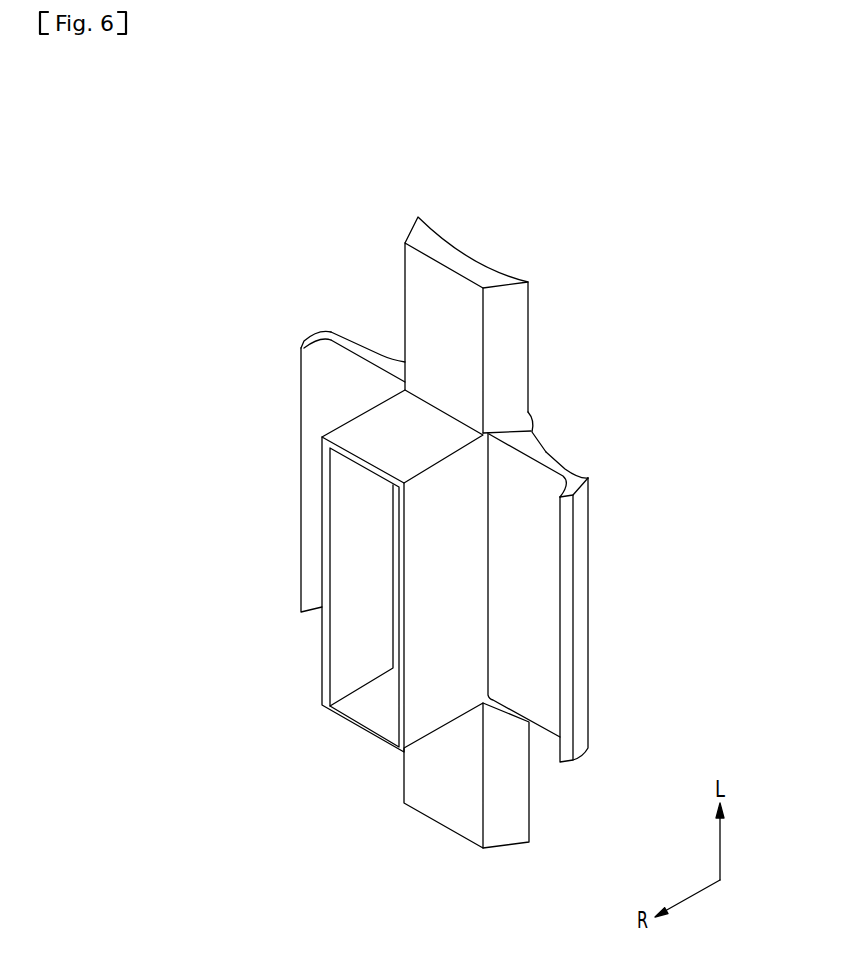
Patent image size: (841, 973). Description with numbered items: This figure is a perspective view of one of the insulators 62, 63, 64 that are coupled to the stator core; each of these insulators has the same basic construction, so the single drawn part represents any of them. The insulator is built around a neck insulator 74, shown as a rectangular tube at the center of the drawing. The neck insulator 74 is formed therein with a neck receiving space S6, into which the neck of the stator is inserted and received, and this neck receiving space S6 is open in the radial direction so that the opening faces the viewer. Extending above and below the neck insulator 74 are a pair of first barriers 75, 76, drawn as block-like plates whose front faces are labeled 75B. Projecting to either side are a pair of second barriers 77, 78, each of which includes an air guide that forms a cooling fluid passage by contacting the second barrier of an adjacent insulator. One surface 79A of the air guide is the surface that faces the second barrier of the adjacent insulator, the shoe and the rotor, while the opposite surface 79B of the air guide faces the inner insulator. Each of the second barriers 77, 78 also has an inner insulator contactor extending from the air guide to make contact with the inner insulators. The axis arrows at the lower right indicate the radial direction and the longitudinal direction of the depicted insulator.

The insulator 62 is at (459, 510).
The insulator 63 is at (459, 510).
The third insulator 64 is at (597, 187).
The neck insulator 74 is at (328, 563).
The neck receiving space S6 is at (355, 632).
The first barrier 75 is at (513, 340).
The support plate front portion 75B is at (452, 313).
The first barrier 76 is at (508, 823).
The second barrier 77 is at (355, 251).
The second barrier 78 is at (663, 458).
The one surface of the air guide 79A is at (557, 458).
The opposite surface of the air guide 79B is at (528, 597).